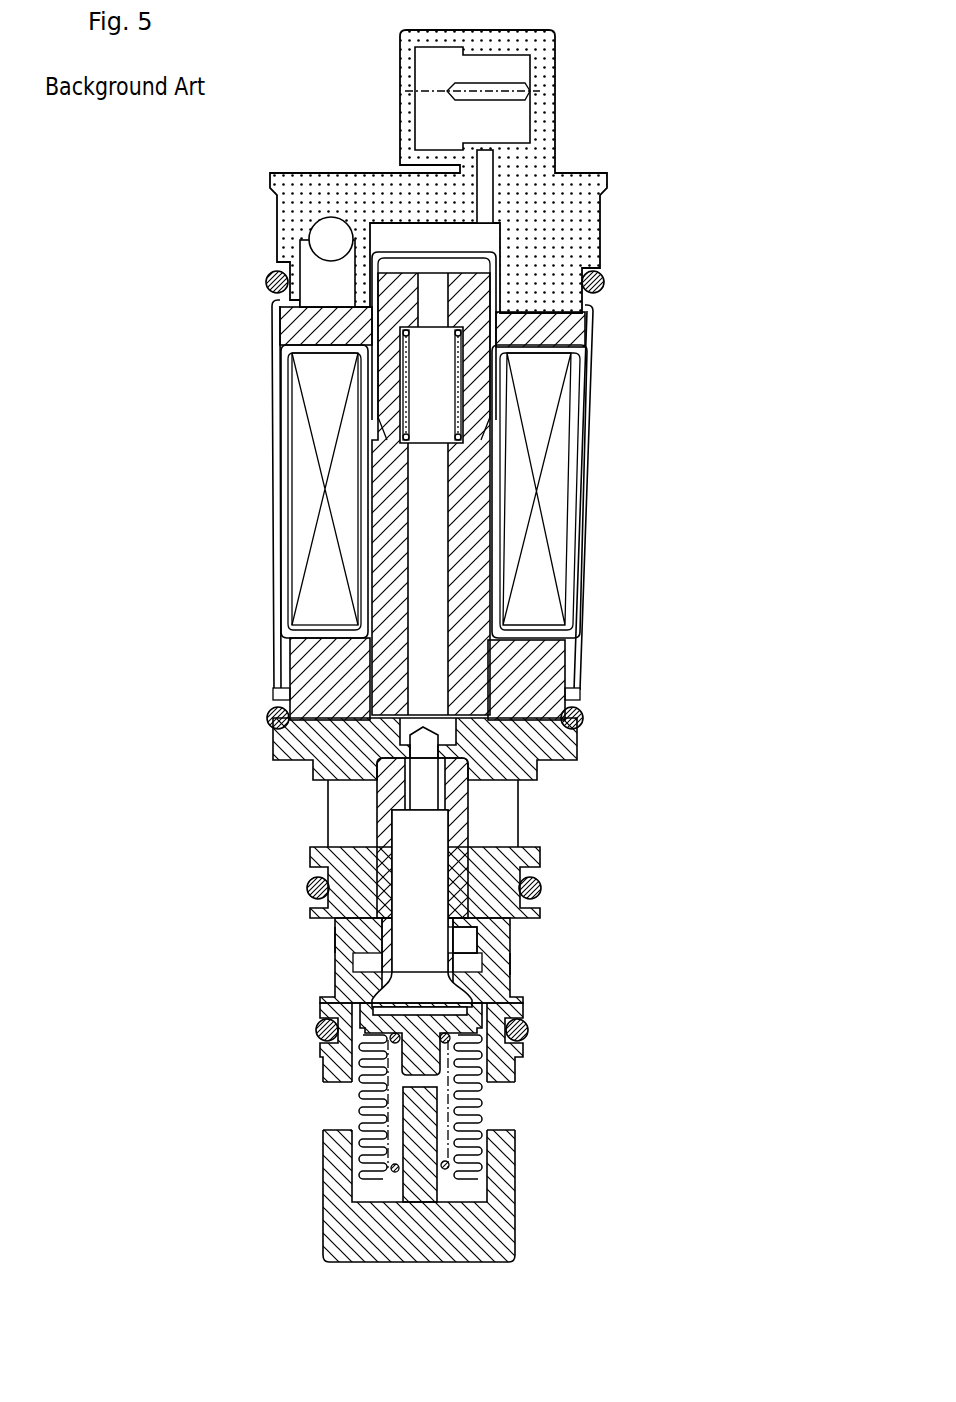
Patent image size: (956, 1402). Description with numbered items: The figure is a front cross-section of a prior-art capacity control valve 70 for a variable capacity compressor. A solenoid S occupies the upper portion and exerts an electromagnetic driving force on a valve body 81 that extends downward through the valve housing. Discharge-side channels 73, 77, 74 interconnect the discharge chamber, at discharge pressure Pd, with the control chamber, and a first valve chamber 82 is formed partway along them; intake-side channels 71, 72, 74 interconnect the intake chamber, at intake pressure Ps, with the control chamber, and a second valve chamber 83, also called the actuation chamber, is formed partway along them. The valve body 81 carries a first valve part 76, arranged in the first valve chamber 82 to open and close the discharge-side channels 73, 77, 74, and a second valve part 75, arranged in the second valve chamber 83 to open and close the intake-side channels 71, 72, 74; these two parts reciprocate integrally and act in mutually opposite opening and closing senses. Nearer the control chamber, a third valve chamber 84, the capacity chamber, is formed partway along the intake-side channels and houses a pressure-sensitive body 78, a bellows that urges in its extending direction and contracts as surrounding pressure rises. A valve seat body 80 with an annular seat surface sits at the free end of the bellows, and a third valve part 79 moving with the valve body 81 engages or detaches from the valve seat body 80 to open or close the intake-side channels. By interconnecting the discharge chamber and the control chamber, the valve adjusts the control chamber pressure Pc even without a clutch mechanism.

The capacity control valve 70 is at (246, 440).
The solenoid S is at (278, 481).
The intake-side channel 71 is at (337, 825).
The intake-side channel 72 is at (423, 753).
The discharge-side channel 73 is at (337, 940).
The channel 74 is at (325, 1113).
The second valve part 75 is at (470, 793).
The first valve part 76 is at (313, 912).
The discharge-side channel 77 is at (513, 970).
The pressure-sensitive body 78 is at (367, 1160).
The third valve part 79 is at (520, 1005).
The valve seat body 80 is at (433, 1050).
The valve body 81 is at (470, 897).
The first valve chamber 82 is at (470, 942).
The second valve chamber 83 is at (473, 818).
The third valve chamber 84 is at (360, 1082).
The intake chamber pressure Ps is at (316, 818).
The discharge chamber pressure Pd is at (326, 940).
The control chamber pressure Pc is at (323, 1105).